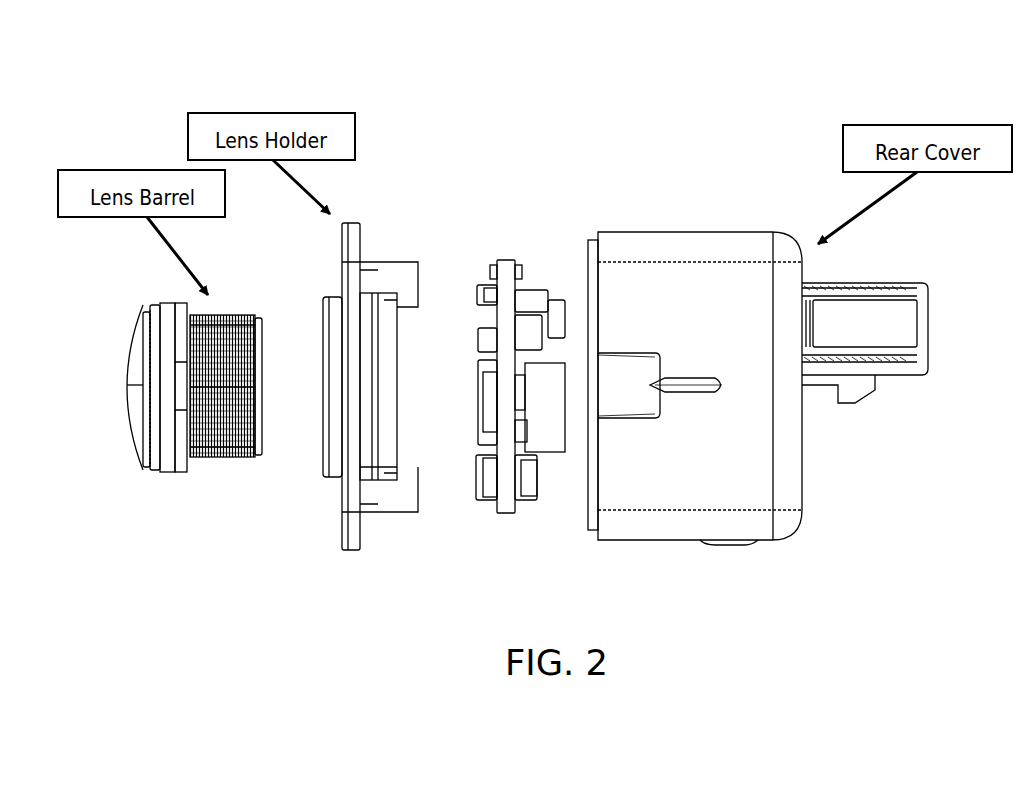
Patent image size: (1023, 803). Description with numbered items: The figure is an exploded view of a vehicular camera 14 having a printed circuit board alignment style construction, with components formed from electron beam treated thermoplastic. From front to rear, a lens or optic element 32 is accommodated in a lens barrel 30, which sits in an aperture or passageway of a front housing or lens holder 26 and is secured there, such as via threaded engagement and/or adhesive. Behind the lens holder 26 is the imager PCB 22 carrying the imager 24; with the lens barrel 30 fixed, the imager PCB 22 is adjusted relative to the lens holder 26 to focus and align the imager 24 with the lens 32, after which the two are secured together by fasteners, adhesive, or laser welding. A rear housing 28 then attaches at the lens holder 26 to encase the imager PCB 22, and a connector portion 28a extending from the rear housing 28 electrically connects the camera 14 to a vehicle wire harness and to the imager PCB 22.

The camera 14 is at (845, 94).
The printed circuit board 22 is at (505, 262).
The imager 24 is at (480, 388).
The lens holder 26 is at (342, 518).
The rear housing 28 is at (703, 237).
The connector portion 28a is at (928, 364).
The lens barrel 30 is at (172, 472).
The lens 32 is at (130, 382).